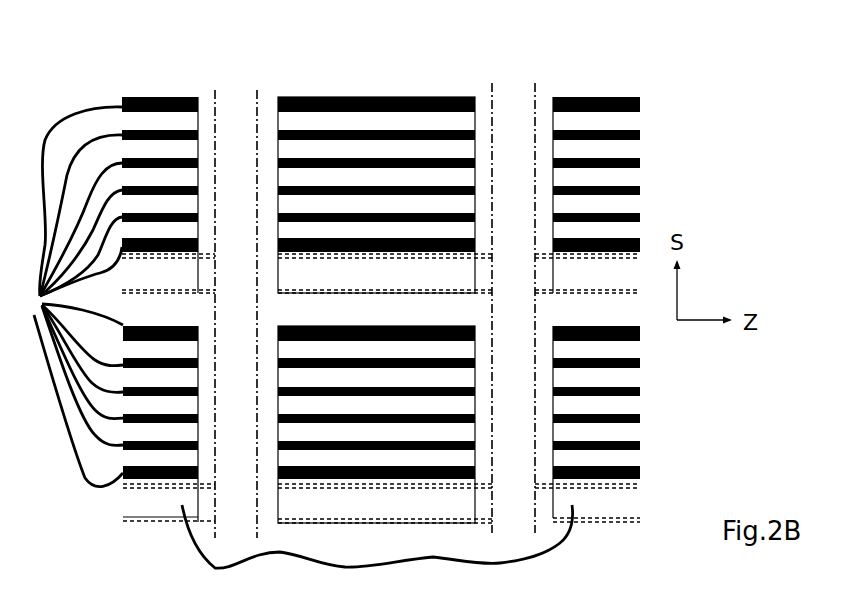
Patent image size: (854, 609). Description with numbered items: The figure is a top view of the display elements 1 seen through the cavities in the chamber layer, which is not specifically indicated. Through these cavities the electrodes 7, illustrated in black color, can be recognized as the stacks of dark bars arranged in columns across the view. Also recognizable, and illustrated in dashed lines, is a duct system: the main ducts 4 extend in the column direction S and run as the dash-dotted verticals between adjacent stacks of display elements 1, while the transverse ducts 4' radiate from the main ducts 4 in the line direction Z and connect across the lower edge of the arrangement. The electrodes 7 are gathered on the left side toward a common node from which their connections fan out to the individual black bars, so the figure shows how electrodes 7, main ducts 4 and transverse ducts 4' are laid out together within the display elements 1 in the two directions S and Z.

The electrode panel / coil segment 1 is at (167, 80).
The main duct 4 is at (375, 275).
The transverse duct 4' is at (377, 549).
The electrode 7 is at (70, 297).